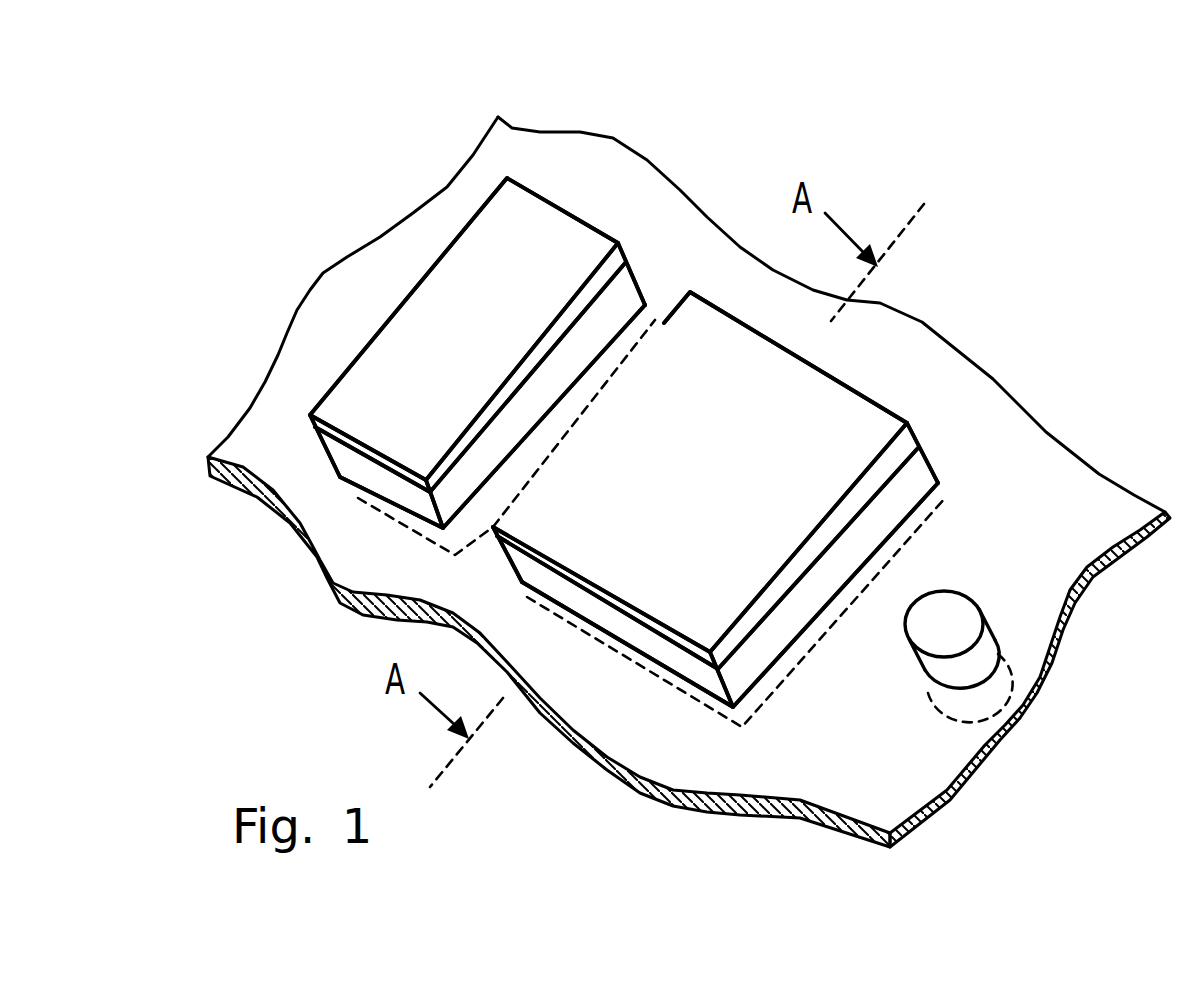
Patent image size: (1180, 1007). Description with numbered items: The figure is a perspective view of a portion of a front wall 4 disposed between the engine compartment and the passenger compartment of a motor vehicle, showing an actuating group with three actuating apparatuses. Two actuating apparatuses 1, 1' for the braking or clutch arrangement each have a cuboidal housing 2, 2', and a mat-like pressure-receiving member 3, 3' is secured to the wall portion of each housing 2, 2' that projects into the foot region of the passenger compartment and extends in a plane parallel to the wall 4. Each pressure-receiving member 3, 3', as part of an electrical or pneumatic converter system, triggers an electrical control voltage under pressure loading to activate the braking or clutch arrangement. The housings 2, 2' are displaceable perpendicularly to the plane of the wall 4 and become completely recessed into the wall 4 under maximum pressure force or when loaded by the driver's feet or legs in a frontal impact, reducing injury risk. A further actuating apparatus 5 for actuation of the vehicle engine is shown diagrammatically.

The actuating apparatus 1 is at (779, 479).
The actuating apparatus 1' is at (406, 366).
The cuboidal housing 2 is at (836, 480).
The cuboidal housing 2' is at (558, 275).
The pressure-receiving member 3 is at (715, 664).
The pressure-receiving member 3' is at (428, 422).
The front wall 4 is at (593, 163).
The actuating apparatus 5 is at (960, 670).